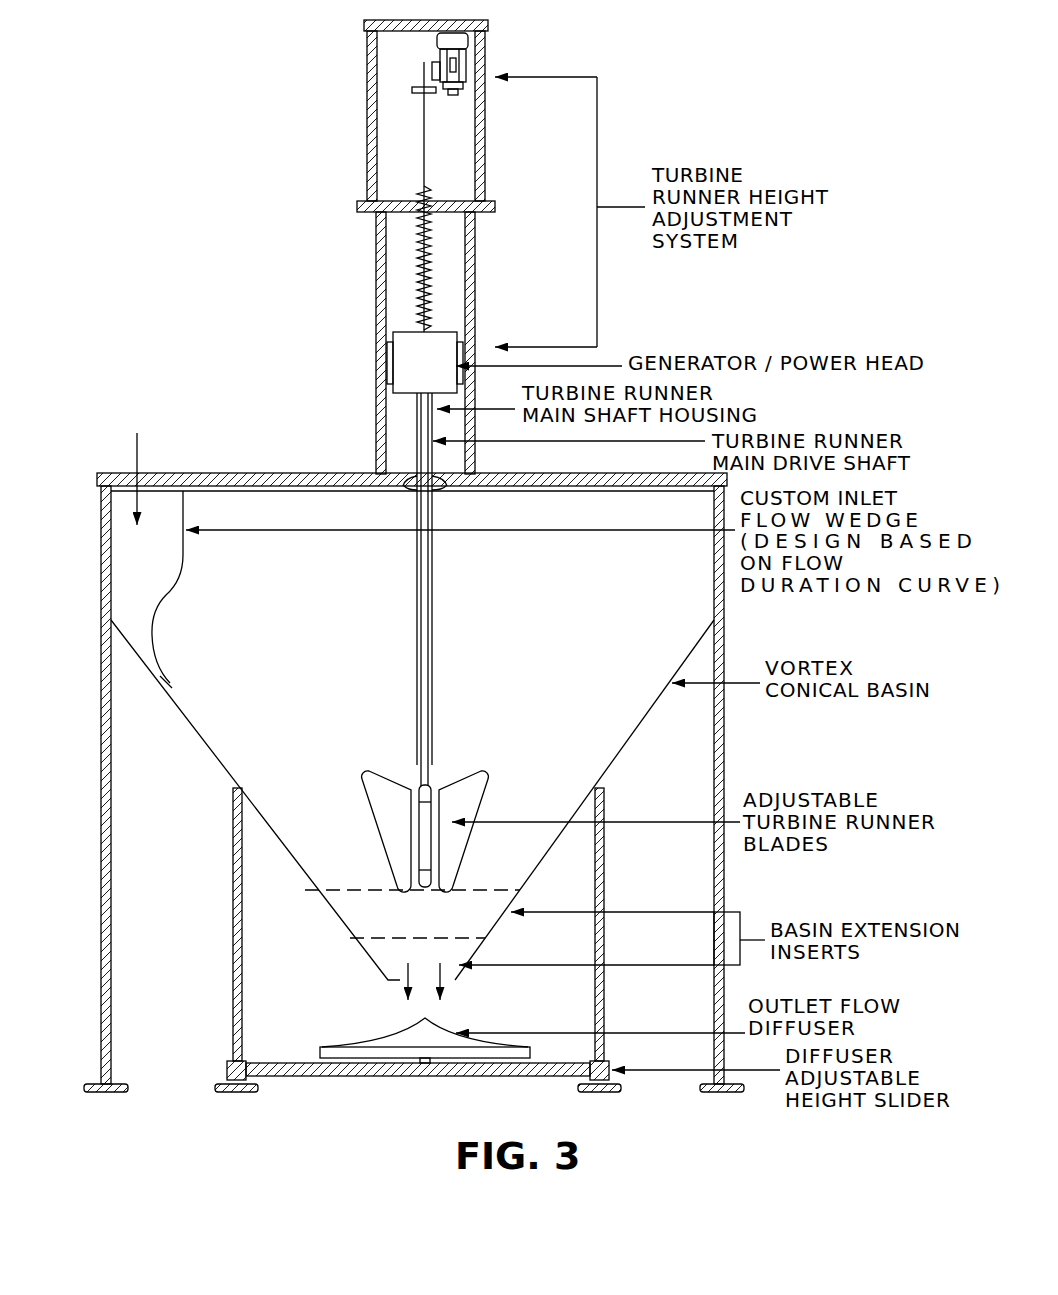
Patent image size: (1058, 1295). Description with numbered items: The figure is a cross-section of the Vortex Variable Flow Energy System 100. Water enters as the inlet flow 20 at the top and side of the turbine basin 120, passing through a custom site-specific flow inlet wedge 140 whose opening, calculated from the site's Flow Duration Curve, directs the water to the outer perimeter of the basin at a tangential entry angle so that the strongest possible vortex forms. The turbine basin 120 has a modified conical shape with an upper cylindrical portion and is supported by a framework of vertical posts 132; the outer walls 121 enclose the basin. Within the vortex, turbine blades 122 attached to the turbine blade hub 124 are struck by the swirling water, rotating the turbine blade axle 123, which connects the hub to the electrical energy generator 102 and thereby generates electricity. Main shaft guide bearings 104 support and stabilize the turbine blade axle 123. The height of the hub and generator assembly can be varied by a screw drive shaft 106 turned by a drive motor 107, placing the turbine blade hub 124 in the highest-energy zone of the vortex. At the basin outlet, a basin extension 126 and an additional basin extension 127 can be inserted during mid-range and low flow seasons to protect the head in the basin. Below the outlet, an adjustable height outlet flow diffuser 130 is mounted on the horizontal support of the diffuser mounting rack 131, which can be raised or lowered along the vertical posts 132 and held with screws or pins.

The Vortex Variable Flow Energy System 100 is at (158, 110).
The inlet flow 20 is at (142, 453).
The electrical energy generator 102 is at (410, 357).
The main shaft guide bearings 104 is at (406, 484).
The screw drive shaft 106 is at (418, 242).
The drive motor 107 is at (462, 40).
The turbine basin 120 is at (197, 733).
The outer tank wall 121 is at (102, 862).
The turbine blades 122 is at (365, 782).
The turbine blade axle 123 is at (416, 623).
The turbine blade hub 124 is at (428, 893).
The basin extension 126 is at (340, 916).
The additional basin extension 127 is at (366, 950).
The adjustable height outlet flow diffuser 130 is at (372, 1042).
The diffuser mounting rack 131 is at (352, 1078).
The vertical posts 132 is at (233, 1000).
The flow inlet wedge 140 is at (168, 584).